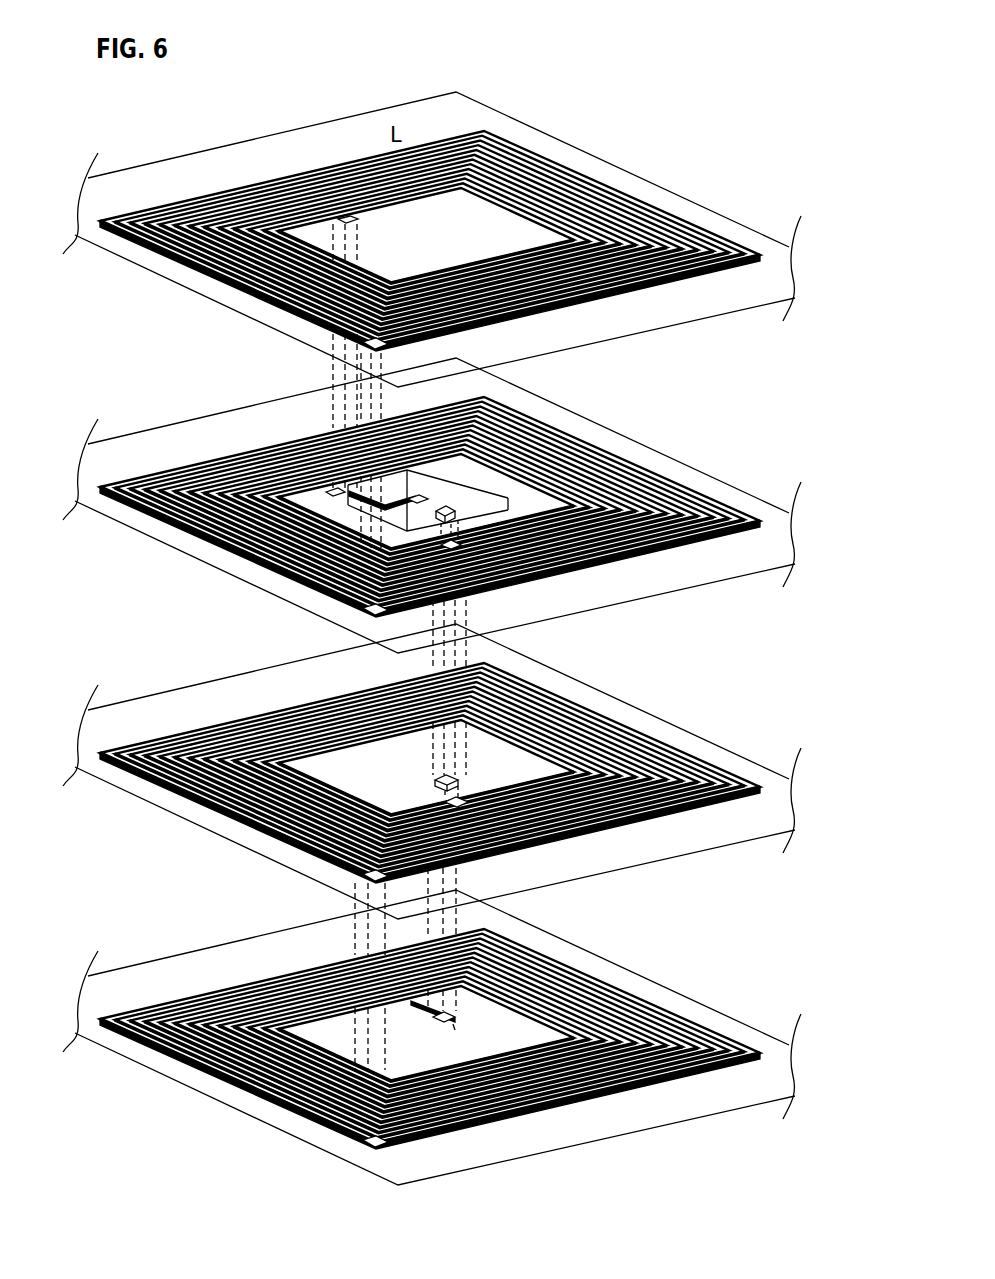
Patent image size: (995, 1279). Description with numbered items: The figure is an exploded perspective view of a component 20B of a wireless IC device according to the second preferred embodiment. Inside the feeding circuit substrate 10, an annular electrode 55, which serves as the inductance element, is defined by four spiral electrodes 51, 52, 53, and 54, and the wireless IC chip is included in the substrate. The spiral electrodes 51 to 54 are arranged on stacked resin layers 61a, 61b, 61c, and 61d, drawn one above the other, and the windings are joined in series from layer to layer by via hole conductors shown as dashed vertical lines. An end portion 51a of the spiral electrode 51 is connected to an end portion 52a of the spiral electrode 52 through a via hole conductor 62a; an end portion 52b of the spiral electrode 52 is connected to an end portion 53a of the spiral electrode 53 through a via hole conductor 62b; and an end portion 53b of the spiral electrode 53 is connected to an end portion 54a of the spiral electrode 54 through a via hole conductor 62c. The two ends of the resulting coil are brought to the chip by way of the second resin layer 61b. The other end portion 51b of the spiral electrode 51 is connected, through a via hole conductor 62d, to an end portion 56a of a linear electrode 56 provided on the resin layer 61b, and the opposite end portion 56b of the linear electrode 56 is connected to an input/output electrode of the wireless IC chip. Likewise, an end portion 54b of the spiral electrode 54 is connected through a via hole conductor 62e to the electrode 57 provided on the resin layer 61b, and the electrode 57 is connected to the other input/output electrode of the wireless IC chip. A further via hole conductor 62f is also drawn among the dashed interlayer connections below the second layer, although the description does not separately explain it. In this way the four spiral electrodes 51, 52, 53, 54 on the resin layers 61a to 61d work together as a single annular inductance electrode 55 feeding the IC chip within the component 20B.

The feeding circuit substrate 10 is at (720, 172).
The component 20B is at (631, 85).
The spiral electrode 51 is at (560, 173).
The end portion 51a is at (382, 343).
The end portion 51b is at (348, 215).
The spiral electrode 52 is at (430, 507).
The end portion 52a is at (389, 627).
The end portion 52b is at (436, 537).
The spiral electrode 53 is at (430, 773).
The end portion 53a is at (453, 795).
The end portion 53b is at (327, 898).
The spiral electrode 54 is at (430, 1039).
The end portion 54a is at (399, 1154).
The end portion 54b is at (454, 1031).
The annular electrode 55 is at (736, 718).
The linear electrode 56 is at (385, 490).
The end portion 56a is at (325, 483).
The end portion 56b is at (420, 491).
The electrode 57 is at (447, 502).
The resin layer 61a is at (253, 133).
The resin layer 61b is at (432, 505).
The resin layer 61c is at (432, 771).
The resin layer 61d is at (432, 1037).
The via hole conductor 62a is at (376, 392).
The via hole conductor 62b is at (460, 612).
The via hole conductor 62c is at (345, 937).
The via hole conductor 62d is at (323, 360).
The via hole conductor 62e is at (450, 880).
The via conductor 62f is at (423, 660).